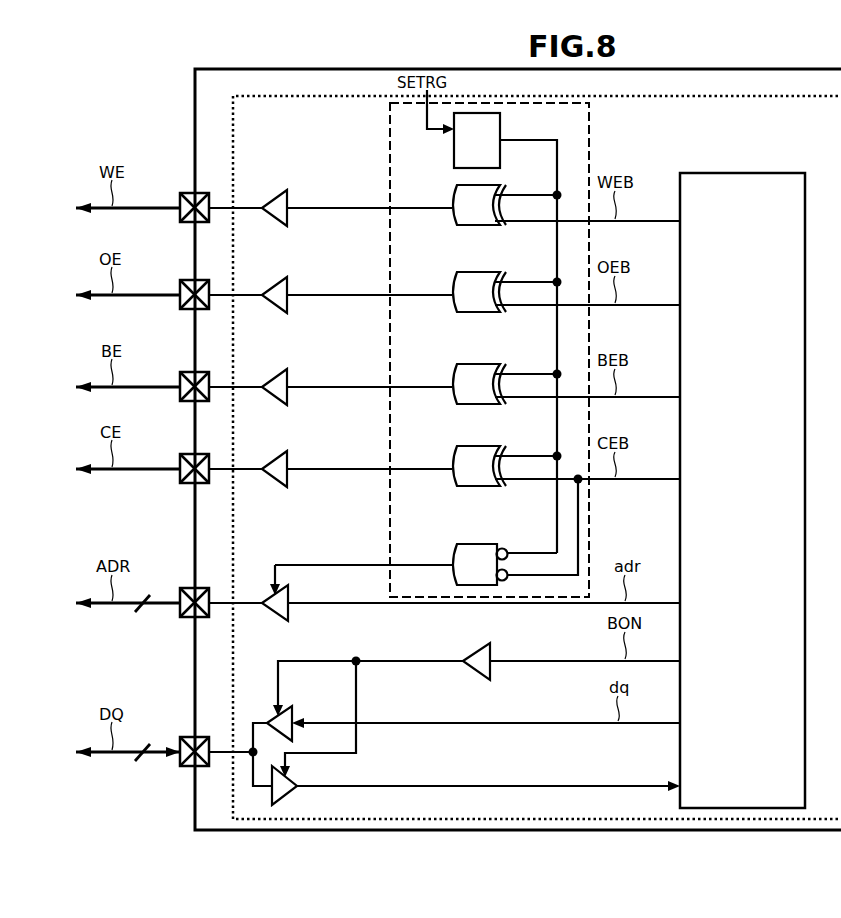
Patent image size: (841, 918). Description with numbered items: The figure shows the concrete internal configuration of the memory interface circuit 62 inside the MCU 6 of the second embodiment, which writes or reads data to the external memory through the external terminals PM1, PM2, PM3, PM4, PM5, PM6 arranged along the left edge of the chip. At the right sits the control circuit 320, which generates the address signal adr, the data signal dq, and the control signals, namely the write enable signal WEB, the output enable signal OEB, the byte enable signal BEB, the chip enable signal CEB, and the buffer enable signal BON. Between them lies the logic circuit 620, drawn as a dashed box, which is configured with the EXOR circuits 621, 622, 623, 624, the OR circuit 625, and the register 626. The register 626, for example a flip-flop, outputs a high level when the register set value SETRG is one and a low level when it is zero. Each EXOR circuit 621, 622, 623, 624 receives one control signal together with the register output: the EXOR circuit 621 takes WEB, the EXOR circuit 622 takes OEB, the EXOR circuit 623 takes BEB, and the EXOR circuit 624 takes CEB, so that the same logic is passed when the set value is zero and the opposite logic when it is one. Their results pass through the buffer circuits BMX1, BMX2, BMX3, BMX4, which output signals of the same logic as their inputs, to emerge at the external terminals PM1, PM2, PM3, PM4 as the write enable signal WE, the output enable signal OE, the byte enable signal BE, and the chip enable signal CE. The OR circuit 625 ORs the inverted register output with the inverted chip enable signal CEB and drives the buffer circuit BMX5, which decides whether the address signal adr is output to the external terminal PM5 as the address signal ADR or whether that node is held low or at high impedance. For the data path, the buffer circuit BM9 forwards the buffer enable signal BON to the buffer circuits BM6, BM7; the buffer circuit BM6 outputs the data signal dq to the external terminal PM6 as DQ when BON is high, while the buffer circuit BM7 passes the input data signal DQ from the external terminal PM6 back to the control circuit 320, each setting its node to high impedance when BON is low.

The MCU 6 is at (193, 83).
The memory interface circuit 62 is at (270, 96).
The logic circuit 620 is at (589, 131).
The EXOR circuit 621 is at (452, 190).
The EXOR circuit 622 is at (452, 277).
The EXOR circuit 623 is at (452, 369).
The EXOR circuit 624 is at (452, 451).
The OR circuit 625 is at (452, 549).
The register 626 is at (500, 127).
The control circuit 320 is at (745, 172).
The external terminal PM1 is at (190, 193).
The external terminal PM2 is at (190, 280).
The external terminal PM3 is at (190, 372).
The external terminal PM4 is at (190, 454).
The external terminal PM5 is at (190, 588).
The external terminal PM6 is at (190, 737).
The buffer circuit BMX1 is at (287, 190).
The buffer circuit BMX2 is at (287, 277).
The buffer circuit BMX3 is at (287, 369).
The buffer circuit BMX4 is at (287, 451).
The buffer circuit BMX5 is at (288, 620).
The buffer circuit BM6 is at (284, 710).
The buffer circuit BM7 is at (297, 795).
The buffer circuit BM9 is at (490, 678).